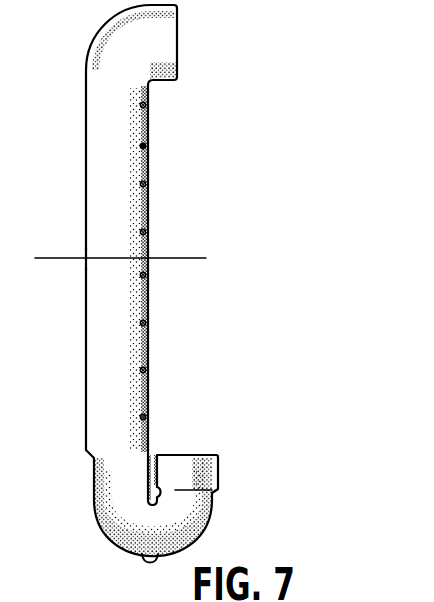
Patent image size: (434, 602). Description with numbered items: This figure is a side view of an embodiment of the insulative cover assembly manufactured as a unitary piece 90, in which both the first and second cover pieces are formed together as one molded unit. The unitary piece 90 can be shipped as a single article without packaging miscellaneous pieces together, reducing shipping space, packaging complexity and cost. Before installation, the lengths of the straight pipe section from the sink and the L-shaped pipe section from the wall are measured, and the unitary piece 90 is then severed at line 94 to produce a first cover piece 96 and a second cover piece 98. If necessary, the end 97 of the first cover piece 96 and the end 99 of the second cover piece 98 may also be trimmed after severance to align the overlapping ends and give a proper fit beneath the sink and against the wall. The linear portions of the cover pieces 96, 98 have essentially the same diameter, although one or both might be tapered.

The unitary piece 90 is at (259, 197).
The line 94 is at (206, 258).
The first cover piece 96 is at (100, 372).
The end of first cover piece 97 is at (86, 260).
The second cover piece 98 is at (100, 169).
The end of second cover piece 99 is at (86, 257).